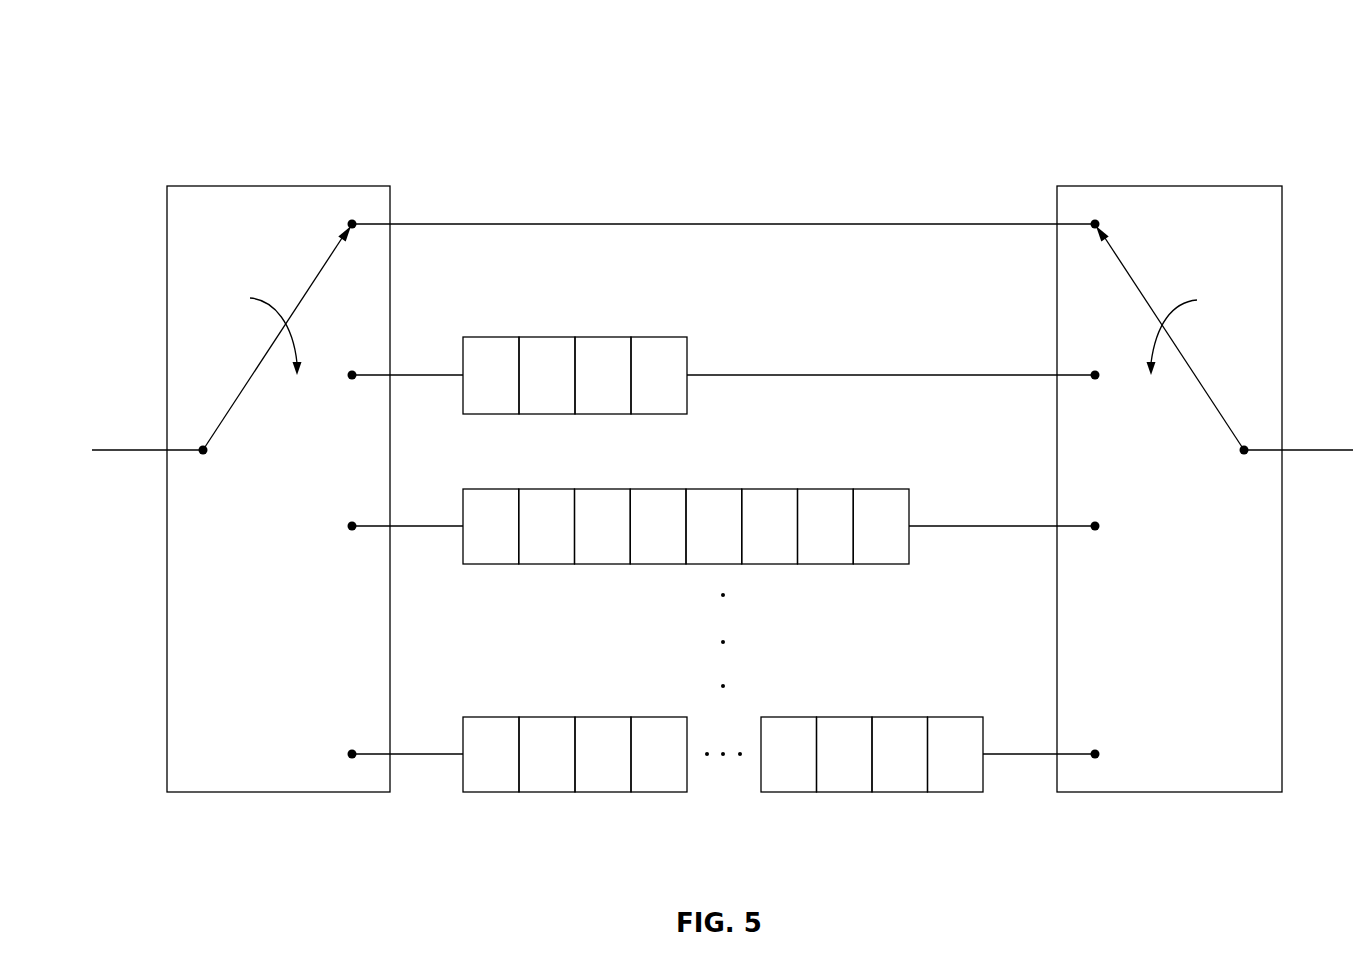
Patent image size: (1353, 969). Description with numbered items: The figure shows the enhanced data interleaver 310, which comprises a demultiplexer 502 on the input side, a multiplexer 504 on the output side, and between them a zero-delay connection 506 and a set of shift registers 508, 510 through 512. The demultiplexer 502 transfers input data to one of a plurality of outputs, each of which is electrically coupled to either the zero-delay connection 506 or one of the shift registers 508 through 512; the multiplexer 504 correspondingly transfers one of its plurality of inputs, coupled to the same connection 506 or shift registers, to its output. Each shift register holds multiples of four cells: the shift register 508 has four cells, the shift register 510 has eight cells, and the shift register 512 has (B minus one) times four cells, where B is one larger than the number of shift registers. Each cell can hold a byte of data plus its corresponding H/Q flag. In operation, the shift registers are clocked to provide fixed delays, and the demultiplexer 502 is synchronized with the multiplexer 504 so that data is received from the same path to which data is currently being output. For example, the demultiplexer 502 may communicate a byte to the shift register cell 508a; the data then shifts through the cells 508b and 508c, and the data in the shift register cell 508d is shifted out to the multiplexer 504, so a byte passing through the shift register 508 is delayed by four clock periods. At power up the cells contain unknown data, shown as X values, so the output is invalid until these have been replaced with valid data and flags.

The enhanced data interleaver 310 is at (841, 93).
The demultiplexer 502 is at (241, 475).
The multiplexer 504 is at (1205, 475).
The zero-delay connection 506 is at (700, 215).
The shift register 508 is at (723, 332).
The shift register cell 508a is at (491, 360).
The shift register cell 508b is at (547, 360).
The shift register cell 508c is at (603, 360).
The shift register cell 508d is at (659, 360).
The shift register 510 is at (905, 470).
The shift register 512 is at (977, 697).